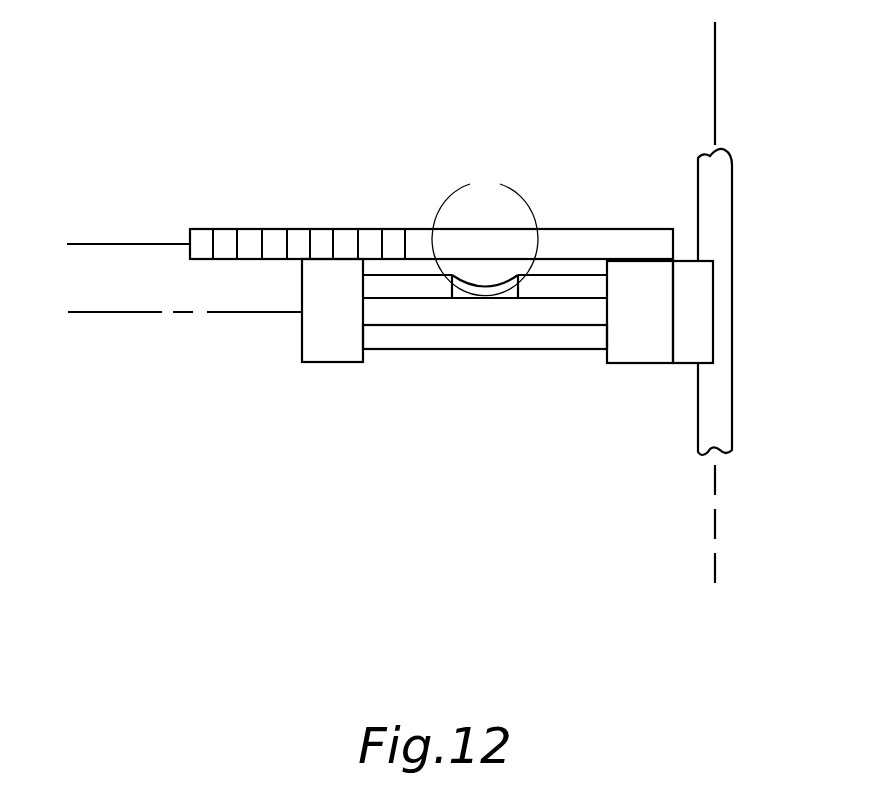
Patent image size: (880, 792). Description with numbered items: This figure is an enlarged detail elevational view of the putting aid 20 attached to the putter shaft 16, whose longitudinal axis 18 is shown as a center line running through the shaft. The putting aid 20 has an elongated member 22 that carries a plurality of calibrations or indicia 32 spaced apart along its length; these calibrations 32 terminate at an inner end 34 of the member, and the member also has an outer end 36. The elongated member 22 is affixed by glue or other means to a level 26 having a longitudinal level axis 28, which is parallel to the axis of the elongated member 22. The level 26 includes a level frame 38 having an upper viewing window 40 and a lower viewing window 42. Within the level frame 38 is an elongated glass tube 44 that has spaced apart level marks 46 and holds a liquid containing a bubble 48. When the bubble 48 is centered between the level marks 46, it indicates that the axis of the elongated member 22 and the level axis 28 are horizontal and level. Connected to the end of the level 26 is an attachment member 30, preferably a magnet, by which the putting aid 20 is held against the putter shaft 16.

The putter shaft 16 is at (722, 210).
The longitudinal axis of the putter shaft 18 is at (714, 55).
The putting aid 20 is at (237, 167).
The elongated member 22 is at (190, 232).
The level 26 is at (302, 362).
The longitudinal level axis 28 is at (100, 313).
The attachment member 30 is at (685, 365).
The light elements 32 is at (405, 238).
The inner end 34 is at (674, 247).
The outer end 36 is at (190, 254).
The level frame 38 is at (302, 323).
The upper viewing window 40 is at (602, 268).
The lower viewing window 42 is at (606, 360).
The elongated glass tube 44 is at (410, 349).
The level marks 46 is at (485, 233).
The bubble 48 is at (483, 287).